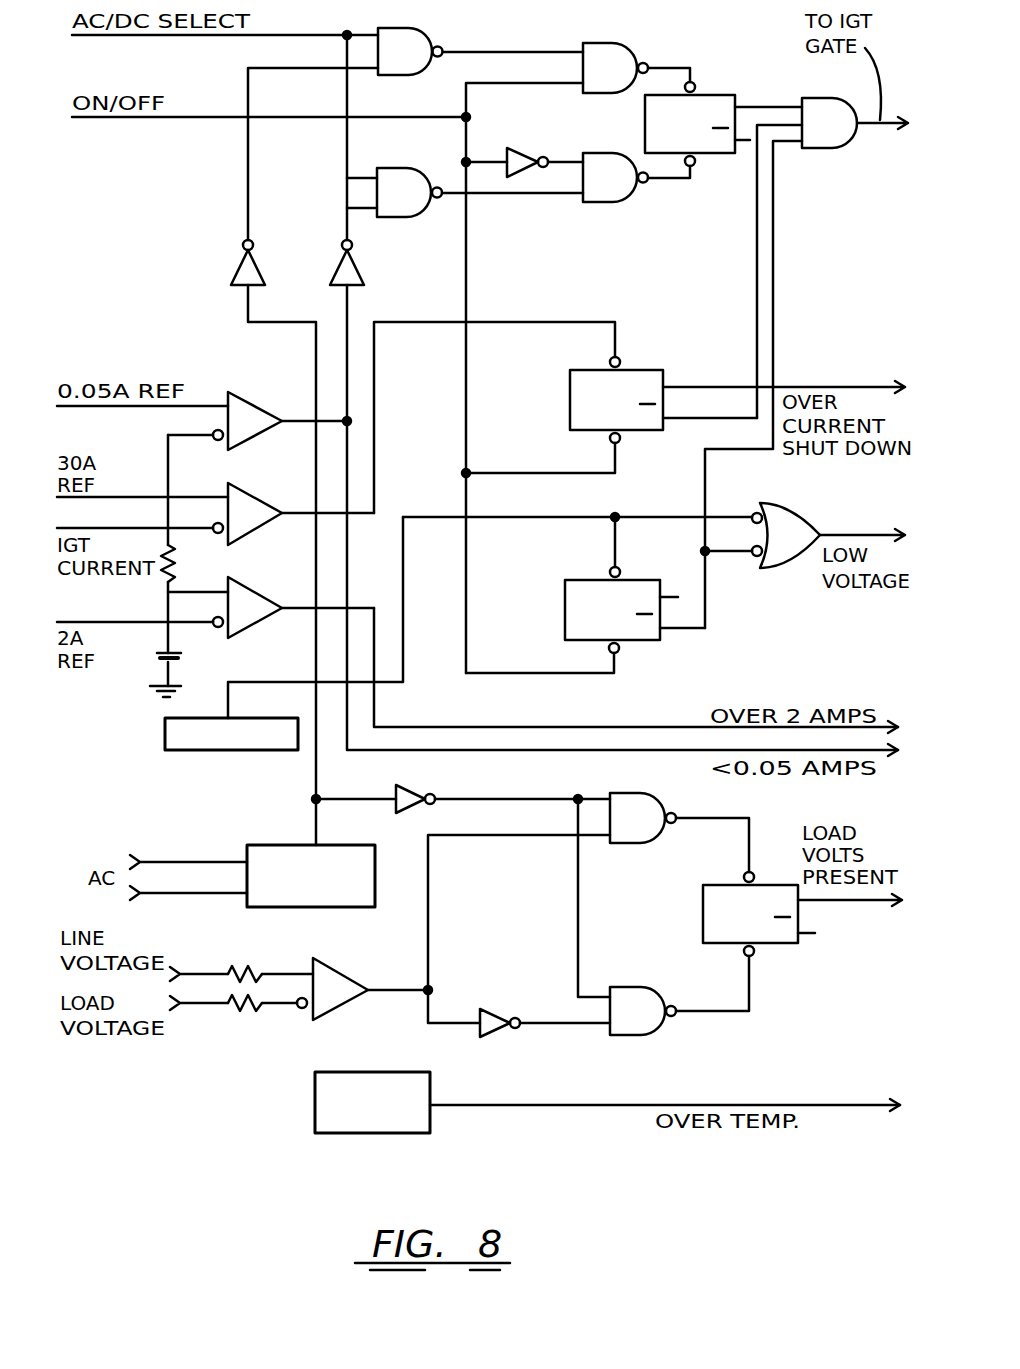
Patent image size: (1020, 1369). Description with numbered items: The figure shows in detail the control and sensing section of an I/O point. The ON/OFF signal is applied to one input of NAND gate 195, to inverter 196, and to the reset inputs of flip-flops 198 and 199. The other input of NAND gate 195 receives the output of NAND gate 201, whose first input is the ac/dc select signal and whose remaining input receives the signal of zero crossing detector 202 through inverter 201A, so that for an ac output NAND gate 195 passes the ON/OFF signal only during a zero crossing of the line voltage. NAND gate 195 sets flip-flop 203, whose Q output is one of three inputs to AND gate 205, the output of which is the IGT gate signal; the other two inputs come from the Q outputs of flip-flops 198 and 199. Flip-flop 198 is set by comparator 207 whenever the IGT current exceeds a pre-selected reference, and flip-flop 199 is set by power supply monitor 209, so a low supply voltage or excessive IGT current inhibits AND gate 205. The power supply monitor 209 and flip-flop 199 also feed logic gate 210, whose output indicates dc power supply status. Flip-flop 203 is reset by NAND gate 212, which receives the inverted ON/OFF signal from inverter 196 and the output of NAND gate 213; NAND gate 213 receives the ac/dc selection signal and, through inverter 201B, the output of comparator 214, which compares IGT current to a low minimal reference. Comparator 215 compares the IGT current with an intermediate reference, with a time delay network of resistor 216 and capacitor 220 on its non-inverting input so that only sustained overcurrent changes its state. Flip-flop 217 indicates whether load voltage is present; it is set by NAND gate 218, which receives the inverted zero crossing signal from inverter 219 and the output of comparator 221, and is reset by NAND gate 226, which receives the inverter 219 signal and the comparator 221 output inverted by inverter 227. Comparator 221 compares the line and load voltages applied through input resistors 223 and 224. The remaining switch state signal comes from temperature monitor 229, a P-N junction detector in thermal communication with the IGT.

The NAND gate 195 is at (605, 43).
The inverter 196 is at (518, 150).
The flip-flop 198 is at (637, 368).
The flip-flop 199 is at (590, 580).
The NAND gate 201 is at (414, 28).
The inverter 201A is at (232, 268).
The inverter 201B is at (331, 268).
The zero crossing detector 202 is at (308, 908).
The flip-flop 203 is at (722, 93).
The AND gate 205 is at (823, 148).
The comparator 207 is at (265, 512).
The power supply monitor 209 is at (165, 735).
The logic gate 210 is at (798, 568).
The NAND gate 212 is at (612, 203).
The NAND gate 213 is at (380, 218).
The comparator 214 is at (265, 410).
The comparator 215 is at (265, 600).
The resistor 216 is at (167, 578).
The flip-flop 217 is at (773, 943).
The NAND gate 218 is at (642, 793).
The inverter 219 is at (402, 786).
The capacitor 220 is at (183, 657).
The comparator 221 is at (323, 1015).
The input resistor 223 is at (249, 968).
The input resistor 224 is at (257, 1008).
The NAND gate 226 is at (659, 977).
The inverter 227 is at (487, 1040).
The temperature monitor 229 is at (383, 1133).